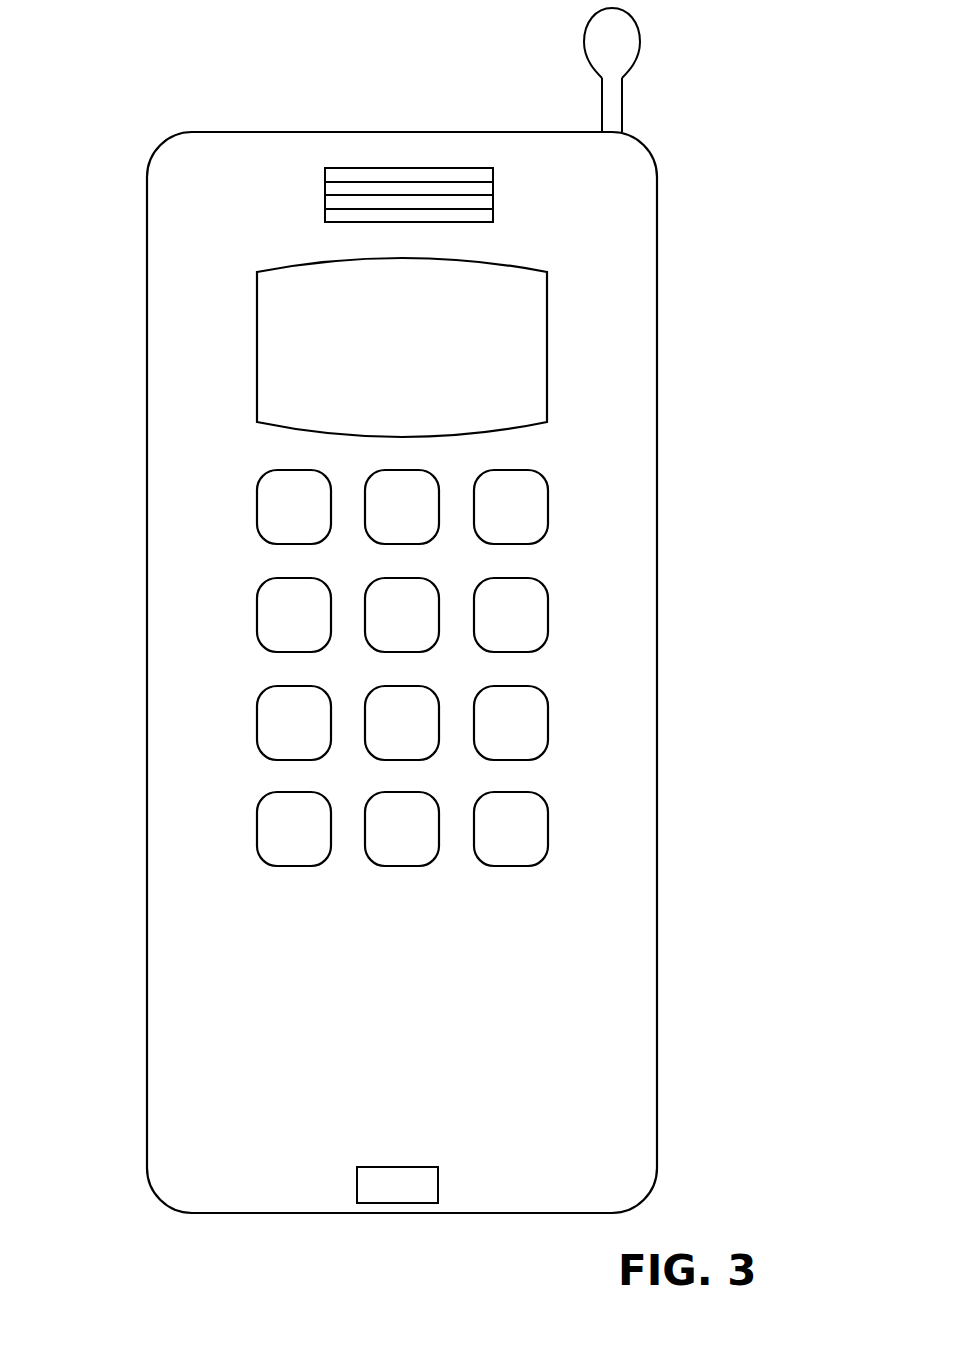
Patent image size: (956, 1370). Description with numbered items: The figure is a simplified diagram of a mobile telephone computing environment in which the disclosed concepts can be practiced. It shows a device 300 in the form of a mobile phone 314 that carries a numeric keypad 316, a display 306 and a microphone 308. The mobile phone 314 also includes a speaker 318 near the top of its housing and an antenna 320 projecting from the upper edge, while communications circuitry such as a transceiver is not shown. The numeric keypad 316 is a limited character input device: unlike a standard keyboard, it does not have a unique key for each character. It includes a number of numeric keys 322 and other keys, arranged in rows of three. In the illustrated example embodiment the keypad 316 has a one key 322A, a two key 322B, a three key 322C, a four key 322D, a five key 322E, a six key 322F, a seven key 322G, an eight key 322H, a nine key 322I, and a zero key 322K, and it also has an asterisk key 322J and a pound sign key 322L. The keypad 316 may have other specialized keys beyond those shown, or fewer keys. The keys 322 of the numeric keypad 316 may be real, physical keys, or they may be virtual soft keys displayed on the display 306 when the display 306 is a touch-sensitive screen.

The device 300 is at (440, 610).
The display 306 is at (549, 347).
The microphone 308 is at (397, 1166).
The mobile phone 314 is at (143, 201).
The numeric keypad 316 is at (474, 674).
The speaker 318 is at (494, 196).
The antenna 320 is at (623, 106).
The numeric keys 322 is at (351, 674).
The one key 322A is at (263, 535).
The two key 322B is at (386, 545).
The three key 322C is at (493, 545).
The four key 322D is at (268, 647).
The five key 322E is at (376, 650).
The six key 322F is at (484, 650).
The seven key 322G is at (270, 757).
The eight key 322H is at (379, 758).
The nine key 322I is at (484, 758).
The asterisk key 322J is at (266, 862).
The zero key 322K is at (379, 864).
The pound sign key 322L is at (484, 864).